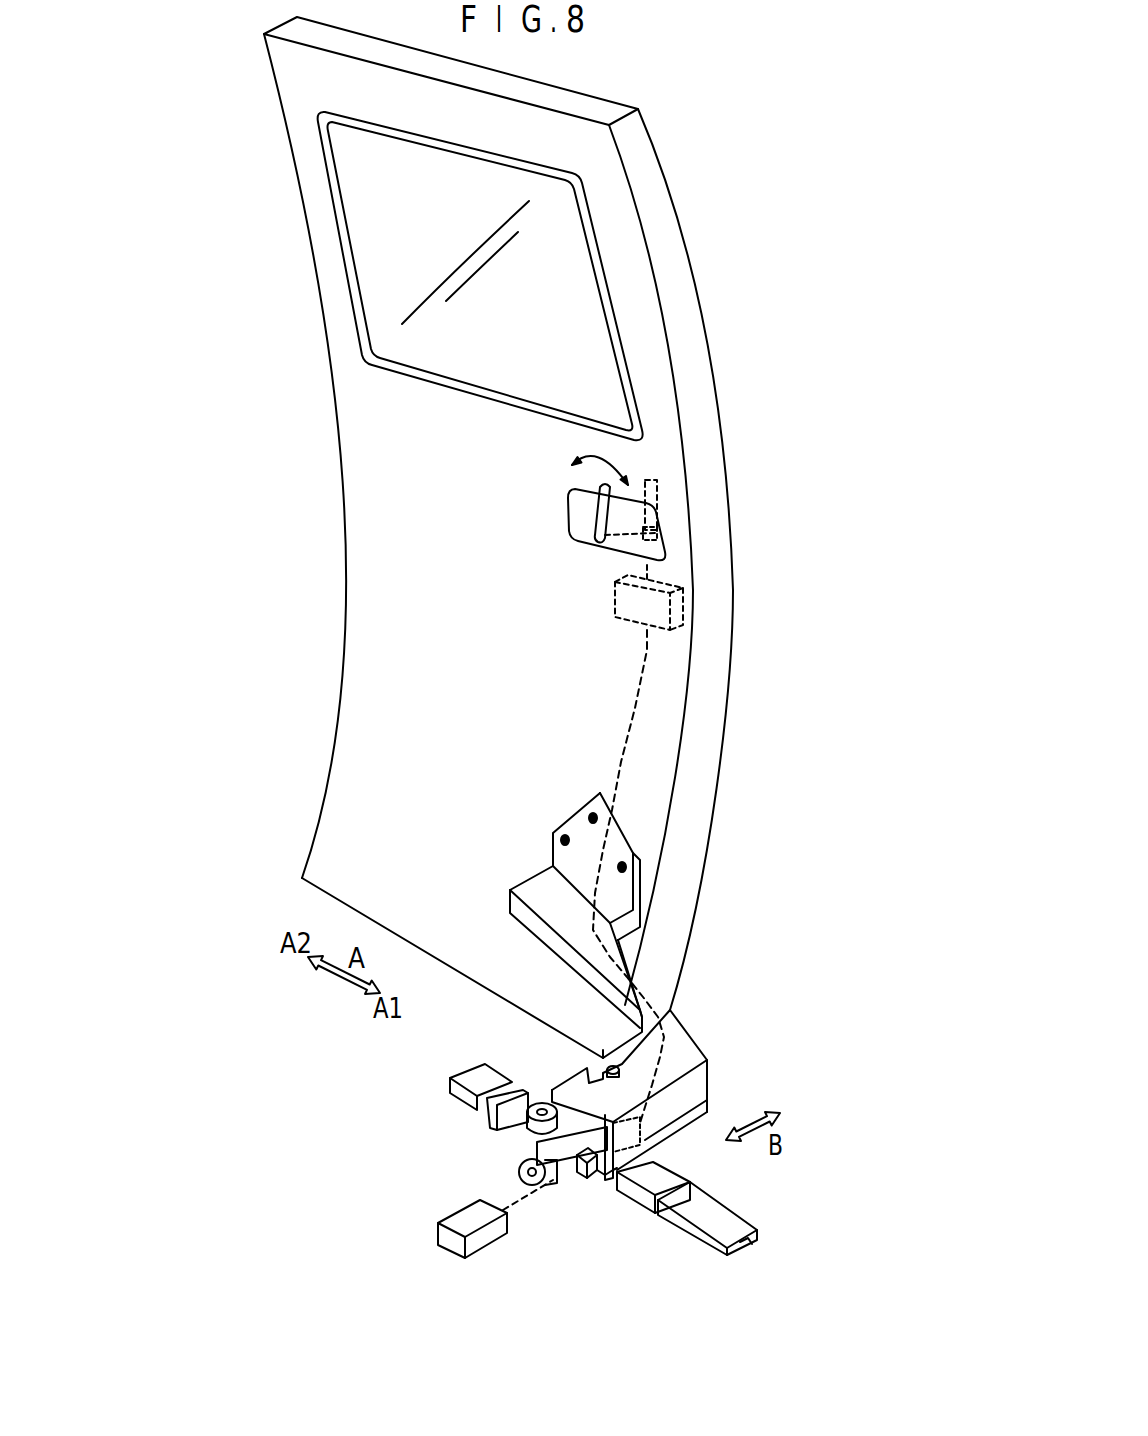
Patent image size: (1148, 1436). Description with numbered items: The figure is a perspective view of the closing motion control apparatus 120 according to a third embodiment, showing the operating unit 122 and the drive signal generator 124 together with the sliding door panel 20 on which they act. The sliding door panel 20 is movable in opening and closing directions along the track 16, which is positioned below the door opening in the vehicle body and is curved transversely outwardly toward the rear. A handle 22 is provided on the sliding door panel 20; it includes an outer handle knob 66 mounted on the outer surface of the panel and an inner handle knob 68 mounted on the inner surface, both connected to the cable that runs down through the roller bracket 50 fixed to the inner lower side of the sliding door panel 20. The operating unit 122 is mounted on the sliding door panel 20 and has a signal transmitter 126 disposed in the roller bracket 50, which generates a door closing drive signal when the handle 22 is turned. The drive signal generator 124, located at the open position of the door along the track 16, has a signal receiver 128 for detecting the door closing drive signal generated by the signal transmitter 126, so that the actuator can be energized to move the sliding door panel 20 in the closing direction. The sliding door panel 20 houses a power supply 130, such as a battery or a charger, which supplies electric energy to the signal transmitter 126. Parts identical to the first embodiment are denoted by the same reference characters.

The track 16 is at (740, 1213).
The sliding door panel 20 is at (728, 453).
The handle 22 is at (675, 518).
The roller bracket 50 is at (690, 1033).
The outer handle knob 66 is at (657, 482).
The inner handle knob 68 is at (600, 530).
The closing motion control apparatus 120 is at (845, 363).
The operating unit 122 is at (597, 1185).
The drive signal generator 124 is at (462, 1203).
The signal transmitter 126 is at (593, 1173).
The signal receiver 128 is at (482, 1238).
The power supply 130 is at (615, 604).